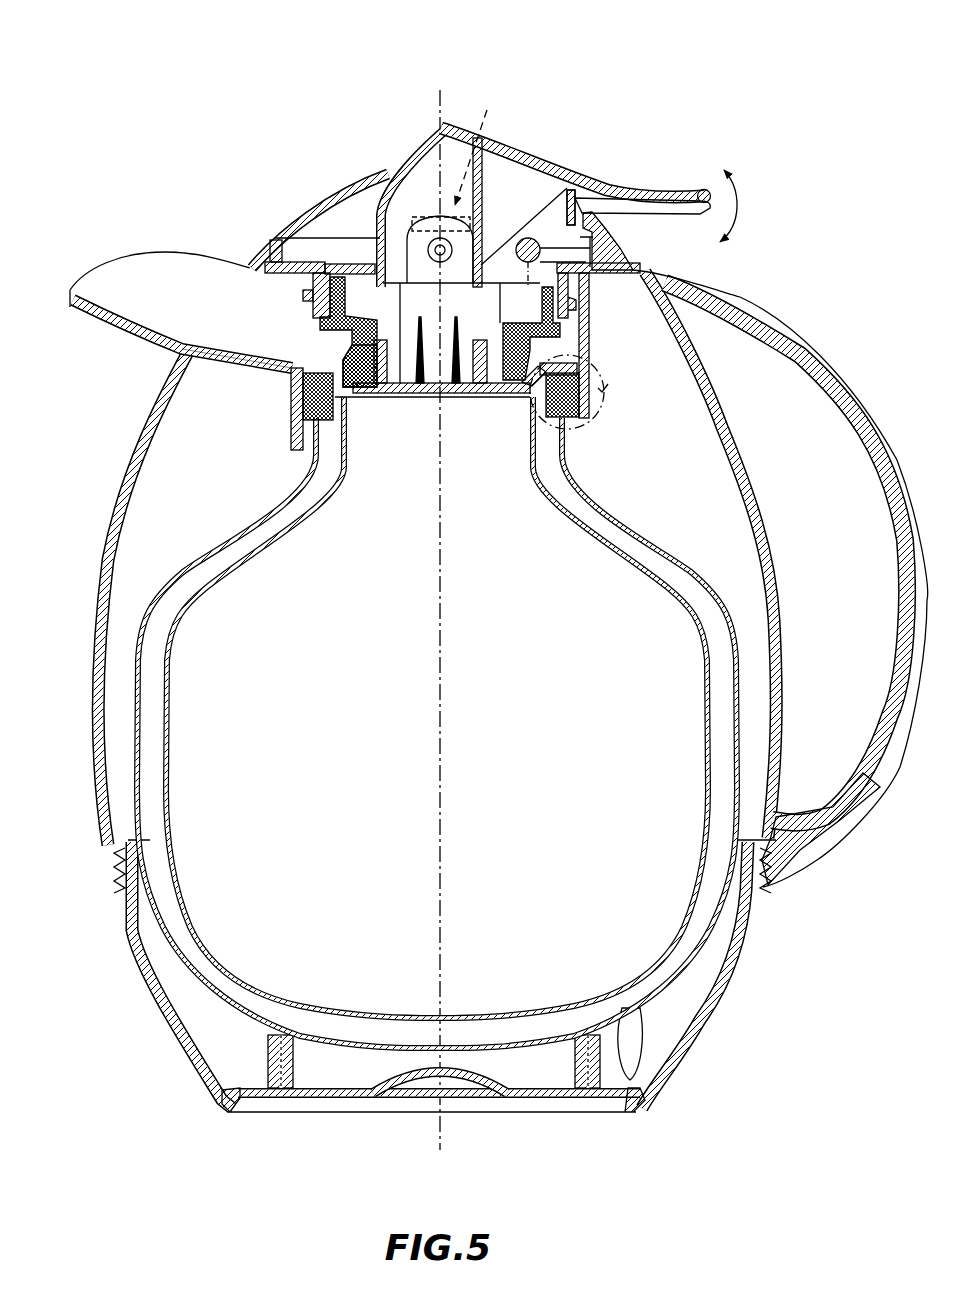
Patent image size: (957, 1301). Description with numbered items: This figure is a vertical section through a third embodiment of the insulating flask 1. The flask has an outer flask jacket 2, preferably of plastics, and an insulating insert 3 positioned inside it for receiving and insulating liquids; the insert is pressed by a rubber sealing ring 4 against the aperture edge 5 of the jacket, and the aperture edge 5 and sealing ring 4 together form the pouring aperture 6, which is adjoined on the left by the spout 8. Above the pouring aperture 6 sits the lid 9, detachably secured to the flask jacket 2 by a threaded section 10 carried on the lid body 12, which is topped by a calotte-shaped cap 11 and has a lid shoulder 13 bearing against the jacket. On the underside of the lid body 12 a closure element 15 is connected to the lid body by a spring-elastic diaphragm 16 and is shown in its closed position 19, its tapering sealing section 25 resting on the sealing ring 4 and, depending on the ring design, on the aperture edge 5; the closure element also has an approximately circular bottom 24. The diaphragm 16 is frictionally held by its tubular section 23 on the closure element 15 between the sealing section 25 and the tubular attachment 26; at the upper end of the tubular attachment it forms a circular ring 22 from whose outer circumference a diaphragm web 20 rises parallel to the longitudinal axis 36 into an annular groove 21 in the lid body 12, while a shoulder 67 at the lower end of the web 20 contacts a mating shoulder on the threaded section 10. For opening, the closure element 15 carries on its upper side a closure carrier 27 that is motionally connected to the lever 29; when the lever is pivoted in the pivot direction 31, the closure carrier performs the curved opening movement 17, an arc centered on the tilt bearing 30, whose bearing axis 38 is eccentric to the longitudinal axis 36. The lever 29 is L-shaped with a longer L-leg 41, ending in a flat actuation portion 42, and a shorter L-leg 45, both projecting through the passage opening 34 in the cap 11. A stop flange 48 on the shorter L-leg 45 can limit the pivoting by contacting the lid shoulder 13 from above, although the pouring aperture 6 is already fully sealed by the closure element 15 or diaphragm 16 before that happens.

The flask 1 is at (484, 579).
The flask jacket 2 is at (97, 575).
The insulating insert 3 is at (607, 527).
The sealing ring 4 is at (290, 422).
The aperture edge 5 is at (293, 377).
The pouring aperture 6 is at (352, 393).
The spout 8 is at (133, 270).
The lid 9 is at (342, 172).
The threaded section 10 is at (302, 292).
The cap 11 is at (306, 258).
The lid body 12 is at (270, 245).
The lid shoulder 13 is at (595, 288).
The closure element 15 is at (452, 394).
The diaphragm 16 is at (348, 352).
The opening movement 17 is at (477, 147).
The closed position 19 is at (482, 400).
The diaphragm web 20 is at (545, 303).
The annular groove 21 is at (330, 265).
The circular ring 22 is at (362, 340).
The tubular section 23 is at (400, 396).
The bottom 24 is at (430, 400).
The sealing section 25 is at (532, 400).
The tubular attachment 26 is at (386, 379).
The closure carrier 27 is at (493, 283).
The lever 29 is at (652, 180).
The tilt bearing 30 is at (573, 193).
The pivot direction 31 is at (736, 205).
The passage opening 34 is at (586, 213).
The longitudinal axis 36 is at (442, 98).
The bearing axis 38 is at (571, 207).
The longer L-leg 41 is at (525, 163).
The actuation portion 42 is at (712, 188).
The shorter L-leg 45 is at (405, 152).
The stop flange 48 is at (350, 262).
The shoulder 67 is at (563, 333).